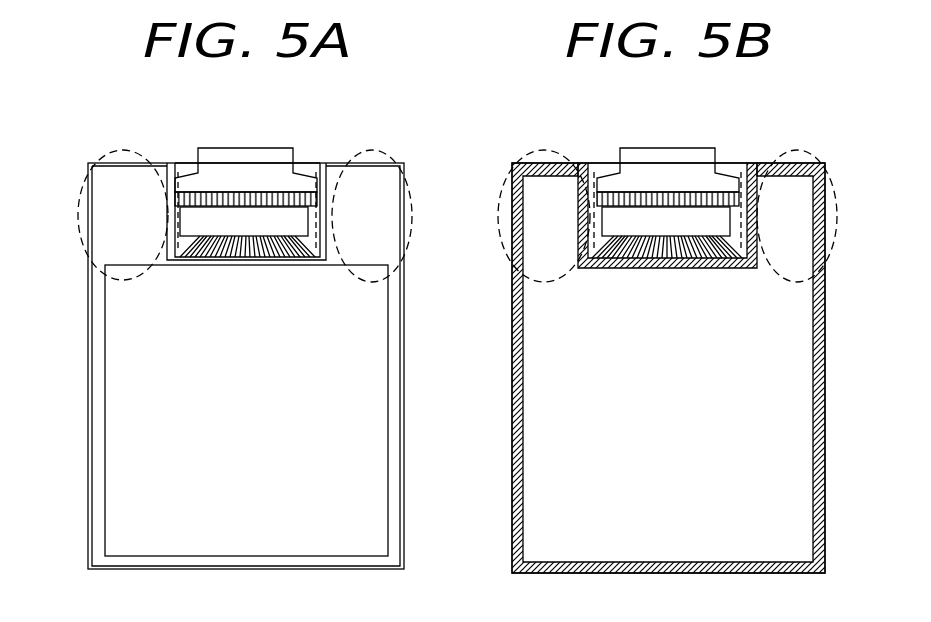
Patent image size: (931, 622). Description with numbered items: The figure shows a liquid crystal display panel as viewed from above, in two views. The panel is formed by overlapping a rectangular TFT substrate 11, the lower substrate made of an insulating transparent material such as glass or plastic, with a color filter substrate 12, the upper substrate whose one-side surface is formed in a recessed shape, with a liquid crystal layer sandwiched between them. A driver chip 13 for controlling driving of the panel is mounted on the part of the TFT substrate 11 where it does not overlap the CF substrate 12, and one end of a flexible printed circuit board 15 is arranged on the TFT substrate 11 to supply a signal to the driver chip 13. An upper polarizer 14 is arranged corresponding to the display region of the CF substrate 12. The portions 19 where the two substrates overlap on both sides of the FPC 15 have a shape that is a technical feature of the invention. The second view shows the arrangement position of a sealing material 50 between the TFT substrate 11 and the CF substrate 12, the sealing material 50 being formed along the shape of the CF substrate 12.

In FIG. 5A, the TFT substrate 11 is at (177, 165).
In FIG. 5B, the TFT substrate 11 is at (597, 168).
In FIG. 5A, the color filter substrate 12 is at (402, 163).
In FIG. 5B, the color filter substrate 12 is at (824, 163).
In FIG. 5A, the driver chip 13 is at (290, 220).
In FIG. 5B, the driver chip 13 is at (713, 220).
In FIG. 5A, the upper polarizer 14 is at (118, 352).
In FIG. 5A, the flexible printed circuit board 15 is at (224, 163).
In FIG. 5B, the flexible printed circuit board 15 is at (646, 163).
In FIG. 5A, the portions 19 is at (105, 152).
In FIG. 5B, the portions 19 is at (527, 152).
In FIG. 5B, the sealing material 50 is at (512, 410).